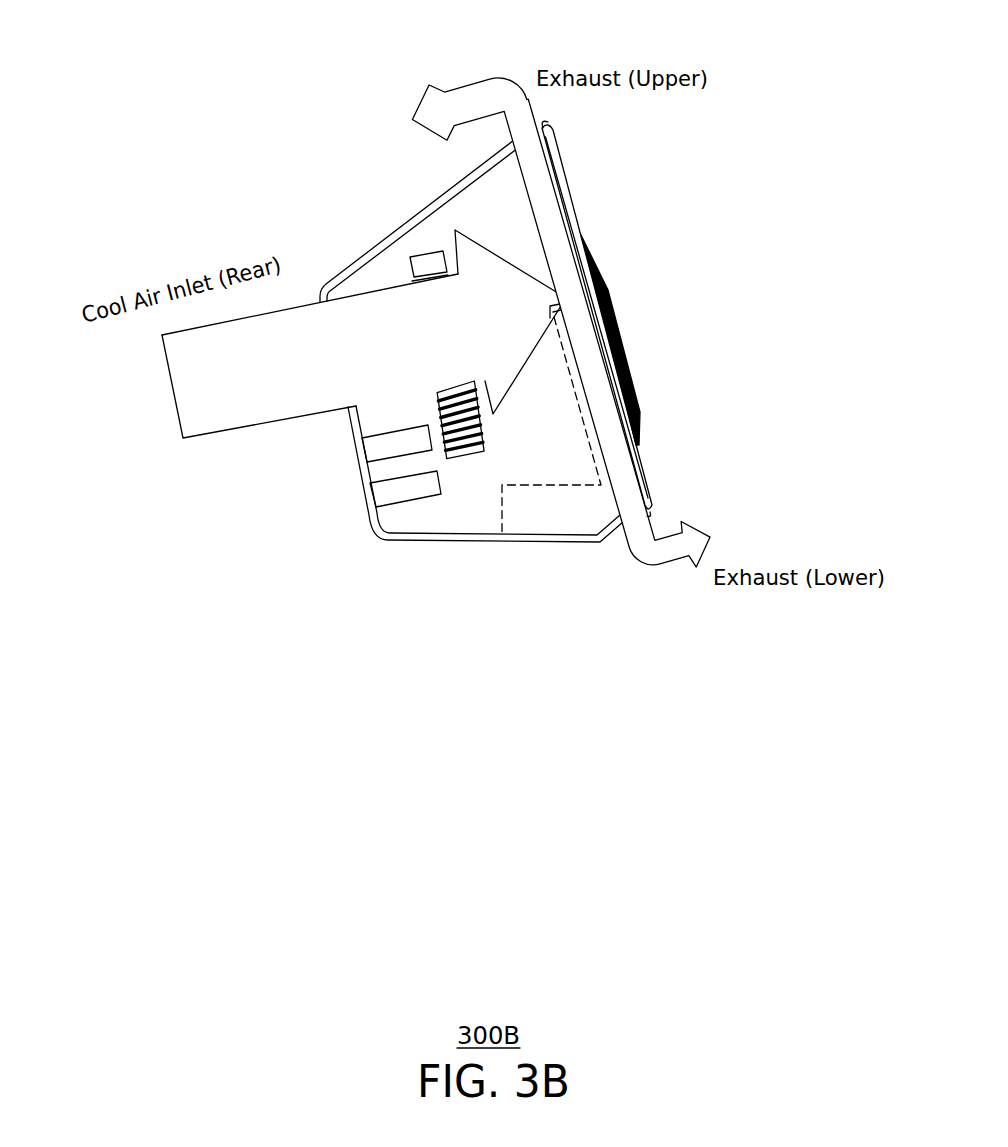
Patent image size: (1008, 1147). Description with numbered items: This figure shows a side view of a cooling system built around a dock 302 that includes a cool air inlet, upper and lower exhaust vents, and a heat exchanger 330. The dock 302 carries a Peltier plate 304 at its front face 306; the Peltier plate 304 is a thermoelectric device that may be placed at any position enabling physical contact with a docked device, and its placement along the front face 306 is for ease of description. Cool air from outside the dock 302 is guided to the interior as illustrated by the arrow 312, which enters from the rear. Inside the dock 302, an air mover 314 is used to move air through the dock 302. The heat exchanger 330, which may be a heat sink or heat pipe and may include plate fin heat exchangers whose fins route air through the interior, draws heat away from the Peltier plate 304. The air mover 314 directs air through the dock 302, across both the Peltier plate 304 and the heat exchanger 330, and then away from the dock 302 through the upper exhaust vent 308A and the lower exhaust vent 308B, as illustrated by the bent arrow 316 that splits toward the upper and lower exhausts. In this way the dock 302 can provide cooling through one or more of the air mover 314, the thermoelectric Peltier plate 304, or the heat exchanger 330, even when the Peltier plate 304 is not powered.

The dock 302 is at (485, 545).
The Peltier plate 304 is at (606, 307).
The front face 306 is at (583, 199).
The upper exhaust vent 308A is at (546, 121).
The lower exhaust vent 308B is at (659, 506).
The arrow 312 is at (171, 386).
The air mover 314 is at (411, 256).
The arrow 316 is at (475, 78).
The heat exchanger 330 is at (578, 410).